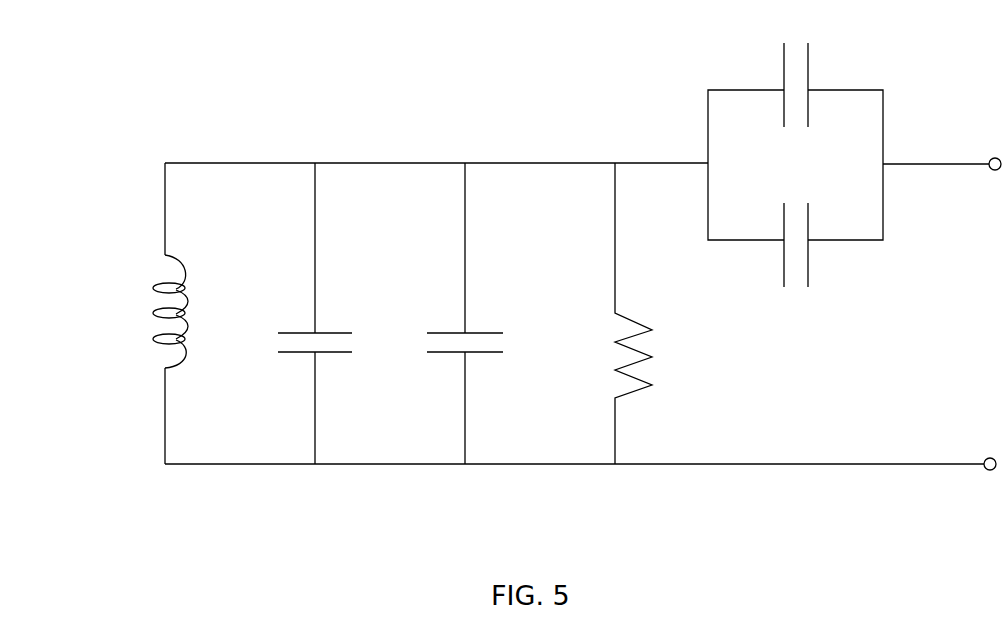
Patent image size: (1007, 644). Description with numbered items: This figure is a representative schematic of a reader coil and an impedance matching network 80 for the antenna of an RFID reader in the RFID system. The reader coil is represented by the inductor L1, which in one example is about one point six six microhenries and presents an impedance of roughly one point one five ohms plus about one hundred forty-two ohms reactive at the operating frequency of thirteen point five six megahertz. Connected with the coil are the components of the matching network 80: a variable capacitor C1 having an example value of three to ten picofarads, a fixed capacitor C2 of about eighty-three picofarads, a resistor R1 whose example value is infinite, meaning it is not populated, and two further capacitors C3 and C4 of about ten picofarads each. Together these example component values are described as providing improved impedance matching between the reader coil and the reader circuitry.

The impedance matching network 80 is at (545, 301).
The reader coil inductor L1 is at (139, 313).
The variable capacitor C1 is at (315, 313).
The capacitor C2 is at (466, 313).
The resistor R1 is at (646, 313).
The capacitor C3 is at (817, 245).
The capacitor C4 is at (817, 85).